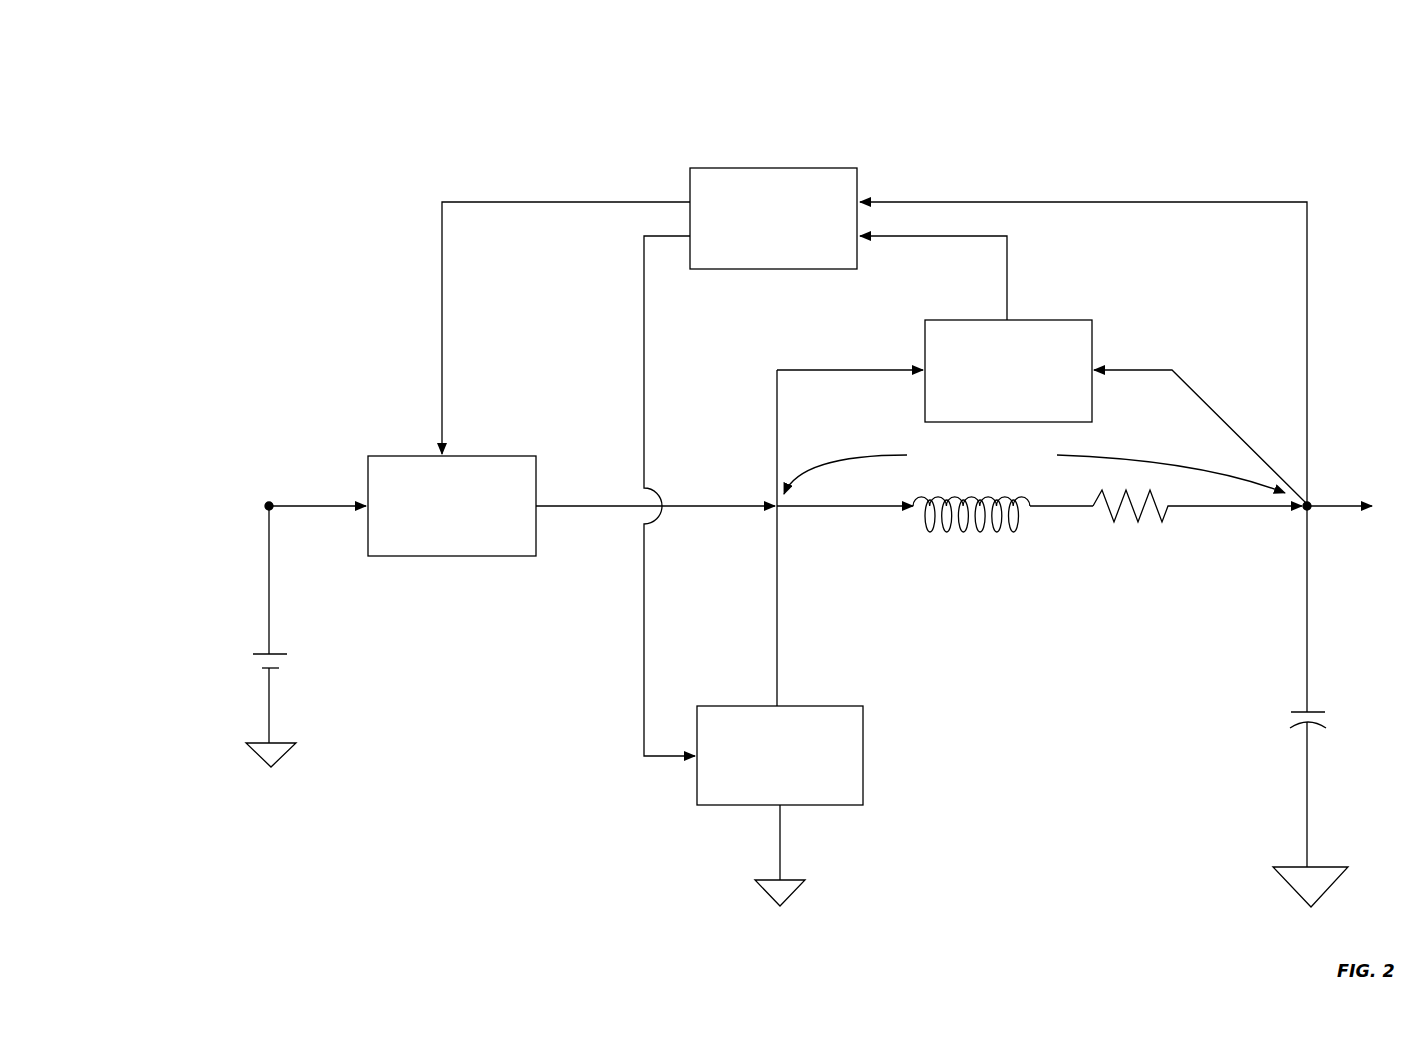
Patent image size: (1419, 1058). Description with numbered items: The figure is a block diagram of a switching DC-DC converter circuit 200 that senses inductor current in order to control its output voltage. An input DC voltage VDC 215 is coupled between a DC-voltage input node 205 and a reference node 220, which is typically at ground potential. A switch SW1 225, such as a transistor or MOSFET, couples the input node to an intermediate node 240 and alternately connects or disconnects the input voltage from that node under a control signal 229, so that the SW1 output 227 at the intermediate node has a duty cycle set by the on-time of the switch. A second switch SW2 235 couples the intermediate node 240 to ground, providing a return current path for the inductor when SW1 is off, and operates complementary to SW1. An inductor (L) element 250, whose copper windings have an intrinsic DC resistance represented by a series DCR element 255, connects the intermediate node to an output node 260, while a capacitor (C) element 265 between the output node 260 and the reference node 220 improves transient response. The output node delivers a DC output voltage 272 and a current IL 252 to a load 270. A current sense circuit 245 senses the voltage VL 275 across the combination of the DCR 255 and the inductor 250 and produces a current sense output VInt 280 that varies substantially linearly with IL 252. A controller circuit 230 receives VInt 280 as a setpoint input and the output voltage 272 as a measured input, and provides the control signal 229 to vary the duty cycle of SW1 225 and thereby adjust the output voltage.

The switching DC-DC converter circuit 200 is at (362, 180).
The DC-voltage input node 205 is at (256, 489).
The VDC signal 215 is at (250, 624).
The reference node 220 is at (246, 760).
The switch SW1 225 is at (364, 578).
The SW1 output 227 is at (586, 526).
The control signal 229 is at (463, 406).
The controller circuit 230 is at (773, 218).
The second switch SW2 235 is at (836, 813).
The intermediate node 240 is at (789, 514).
The current sense circuit 245 is at (1042, 412).
The inductor (L) element 250 is at (957, 541).
The inductor current IL 252 is at (845, 529).
The DC resistor (DCR) element 255 is at (1103, 530).
The output node 260 is at (1318, 497).
The capacitor (C) element 265 is at (1270, 721).
The load 270 is at (1339, 547).
The DC output voltage 272 is at (1083, 333).
The voltage VL 275 is at (1034, 470).
The current sense output VInt 280 is at (976, 273).